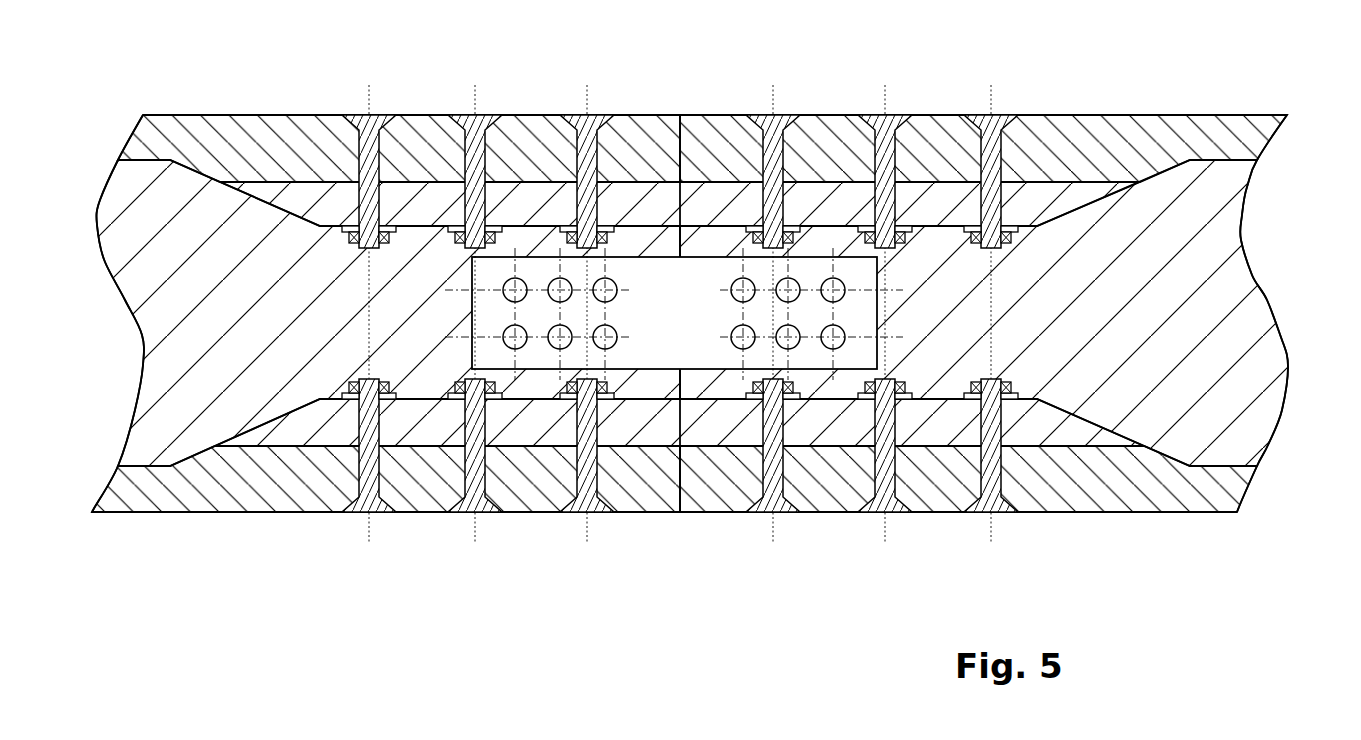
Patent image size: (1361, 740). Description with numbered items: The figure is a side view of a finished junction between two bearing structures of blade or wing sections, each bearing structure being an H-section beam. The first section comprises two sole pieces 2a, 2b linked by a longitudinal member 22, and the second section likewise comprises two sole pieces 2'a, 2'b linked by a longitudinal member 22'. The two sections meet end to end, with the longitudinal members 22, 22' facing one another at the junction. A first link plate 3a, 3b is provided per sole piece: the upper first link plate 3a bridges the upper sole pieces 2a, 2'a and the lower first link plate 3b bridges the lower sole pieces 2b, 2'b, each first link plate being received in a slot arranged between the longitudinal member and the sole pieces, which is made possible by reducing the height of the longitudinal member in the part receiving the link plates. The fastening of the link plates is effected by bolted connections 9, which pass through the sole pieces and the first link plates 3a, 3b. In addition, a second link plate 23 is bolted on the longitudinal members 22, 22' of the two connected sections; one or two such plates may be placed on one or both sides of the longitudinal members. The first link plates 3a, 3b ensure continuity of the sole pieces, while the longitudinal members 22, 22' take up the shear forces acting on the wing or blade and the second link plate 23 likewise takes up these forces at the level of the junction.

The sole piece 2a is at (300, 140).
The sole piece 2'a is at (983, 121).
The sole piece 2b is at (283, 495).
The sole piece 2'b is at (968, 536).
The first link plate 3a is at (515, 193).
The first link plate 3b is at (648, 440).
The bolted connection 9 is at (378, 122).
The longitudinal member 22 is at (357, 313).
The longitudinal member 22' is at (1019, 313).
The second link plate 23 is at (493, 355).